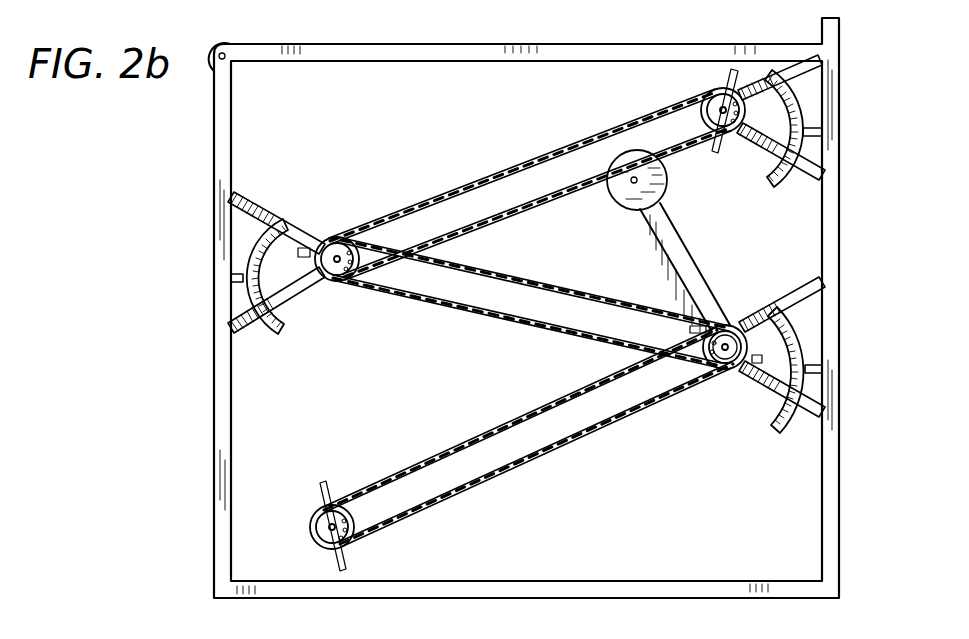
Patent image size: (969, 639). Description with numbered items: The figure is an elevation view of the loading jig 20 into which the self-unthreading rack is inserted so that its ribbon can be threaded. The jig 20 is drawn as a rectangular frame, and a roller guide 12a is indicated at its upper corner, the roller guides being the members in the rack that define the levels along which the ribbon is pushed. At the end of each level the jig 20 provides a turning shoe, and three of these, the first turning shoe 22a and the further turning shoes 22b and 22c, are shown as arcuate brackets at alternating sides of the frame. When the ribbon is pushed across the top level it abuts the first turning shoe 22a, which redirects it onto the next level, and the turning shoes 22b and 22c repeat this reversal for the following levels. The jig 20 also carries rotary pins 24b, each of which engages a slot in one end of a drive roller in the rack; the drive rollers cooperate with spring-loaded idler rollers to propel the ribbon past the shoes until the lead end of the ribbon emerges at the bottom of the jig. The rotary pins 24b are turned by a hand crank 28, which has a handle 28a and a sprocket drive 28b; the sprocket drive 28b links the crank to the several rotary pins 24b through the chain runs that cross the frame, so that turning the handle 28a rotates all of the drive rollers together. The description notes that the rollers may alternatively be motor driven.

The roller guide 12a is at (222, 42).
The loading jig 20 is at (495, 62).
The first turning shoe 22a is at (774, 187).
The turning shoe 22b is at (281, 218).
The turning shoe 22c is at (772, 424).
The rotary pin 24b is at (728, 80).
The hand crank 28 is at (642, 238).
The handle 28a is at (498, 424).
The sprocket drive 28b is at (726, 344).